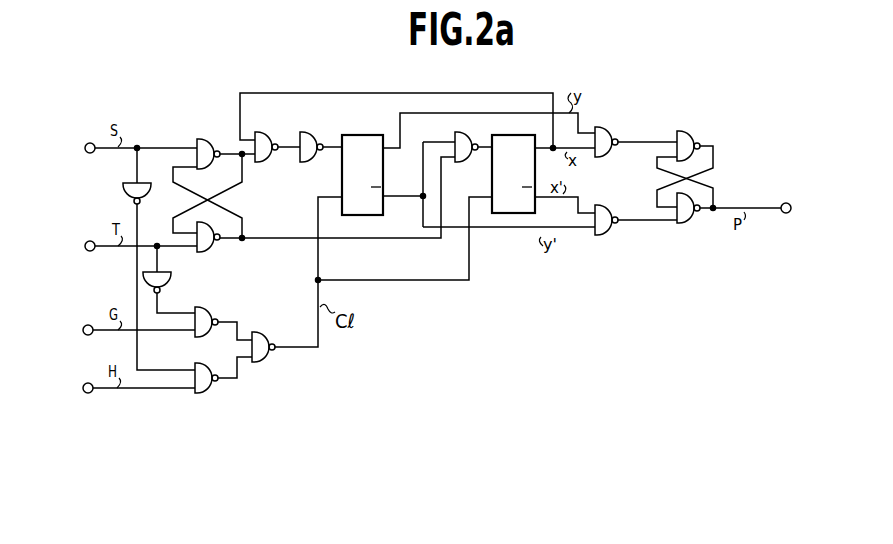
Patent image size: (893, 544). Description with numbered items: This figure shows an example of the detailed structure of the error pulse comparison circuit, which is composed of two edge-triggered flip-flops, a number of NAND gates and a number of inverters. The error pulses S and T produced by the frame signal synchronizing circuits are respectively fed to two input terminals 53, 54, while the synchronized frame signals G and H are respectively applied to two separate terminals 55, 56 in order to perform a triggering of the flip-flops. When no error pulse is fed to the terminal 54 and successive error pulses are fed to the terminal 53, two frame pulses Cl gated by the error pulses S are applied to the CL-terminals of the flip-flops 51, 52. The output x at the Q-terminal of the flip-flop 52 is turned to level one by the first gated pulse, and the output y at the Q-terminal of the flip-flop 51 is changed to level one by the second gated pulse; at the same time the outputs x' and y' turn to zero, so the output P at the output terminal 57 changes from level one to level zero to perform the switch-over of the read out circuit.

The flip-flop 51 is at (357, 134).
The flip-flop 52 is at (515, 215).
The input terminal 53 is at (85, 148).
The input terminal 54 is at (85, 246).
The terminal 55 is at (83, 332).
The terminal 56 is at (83, 389).
The output terminal 57 is at (791, 205).